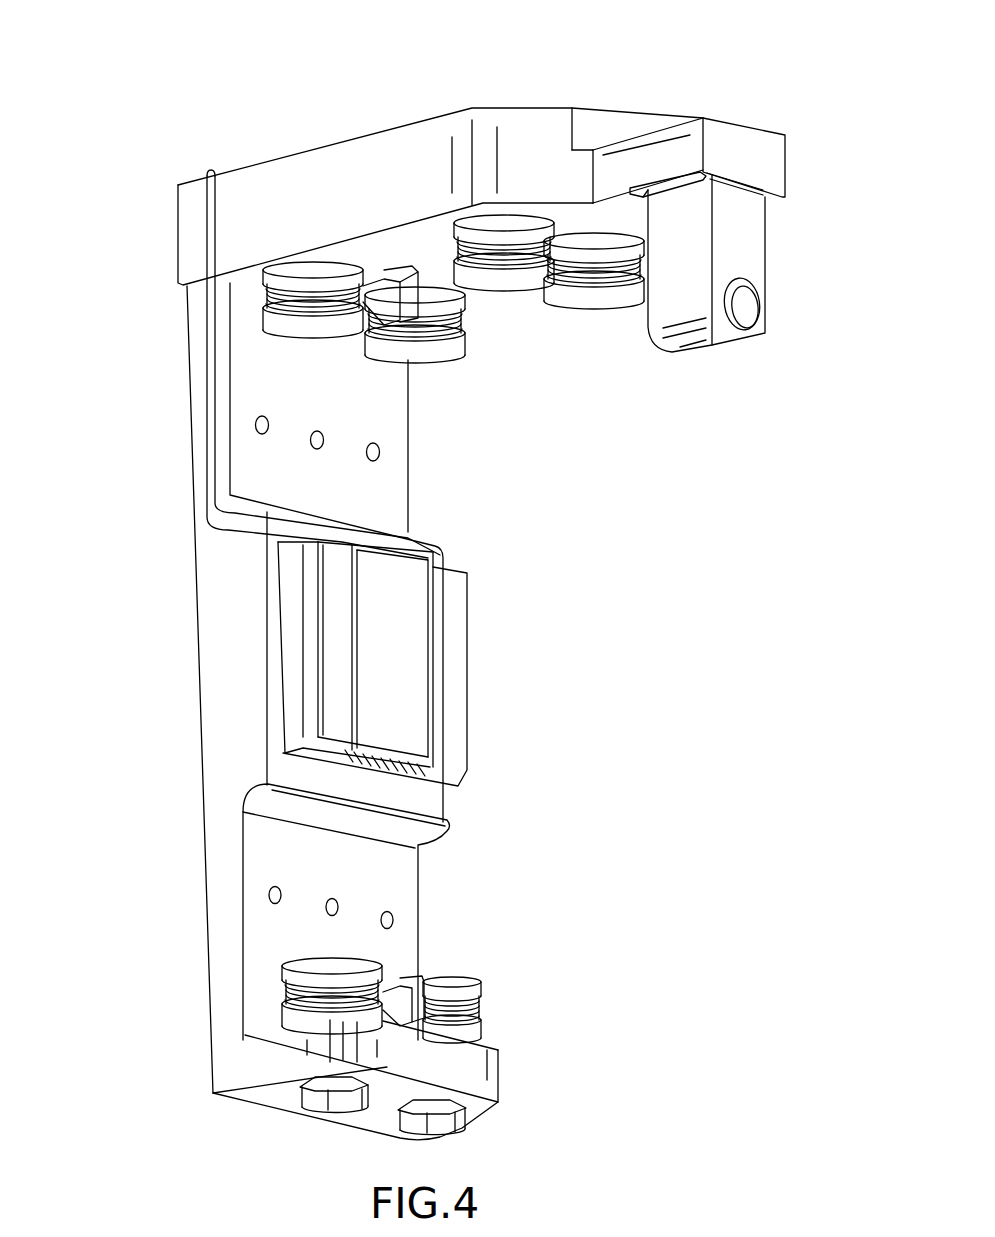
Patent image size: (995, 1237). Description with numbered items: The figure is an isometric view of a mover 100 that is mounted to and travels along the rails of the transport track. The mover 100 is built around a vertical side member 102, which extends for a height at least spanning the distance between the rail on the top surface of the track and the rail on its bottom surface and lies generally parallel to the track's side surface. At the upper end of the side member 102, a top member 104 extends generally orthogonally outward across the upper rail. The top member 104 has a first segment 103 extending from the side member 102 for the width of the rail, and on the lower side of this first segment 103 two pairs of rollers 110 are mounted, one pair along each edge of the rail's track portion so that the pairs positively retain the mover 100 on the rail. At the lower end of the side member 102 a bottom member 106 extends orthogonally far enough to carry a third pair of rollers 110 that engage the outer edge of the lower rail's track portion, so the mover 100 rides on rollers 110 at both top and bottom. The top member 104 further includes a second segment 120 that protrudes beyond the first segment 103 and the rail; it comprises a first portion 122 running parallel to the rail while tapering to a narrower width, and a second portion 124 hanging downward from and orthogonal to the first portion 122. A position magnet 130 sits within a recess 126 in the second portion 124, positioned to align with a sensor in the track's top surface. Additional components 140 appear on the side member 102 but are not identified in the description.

The mover 100 is at (150, 104).
The side member 102 is at (190, 546).
The first segment 103 is at (293, 193).
The top member 104 is at (352, 138).
The bottom member 106 is at (467, 1062).
The rollers 110 is at (383, 350).
The second segment 120 is at (747, 128).
The first portion 122 is at (647, 156).
The second portion 124 is at (747, 237).
The recess 126 is at (753, 314).
The position magnet 130 is at (743, 303).
The mounting brackets 140 is at (515, 617).